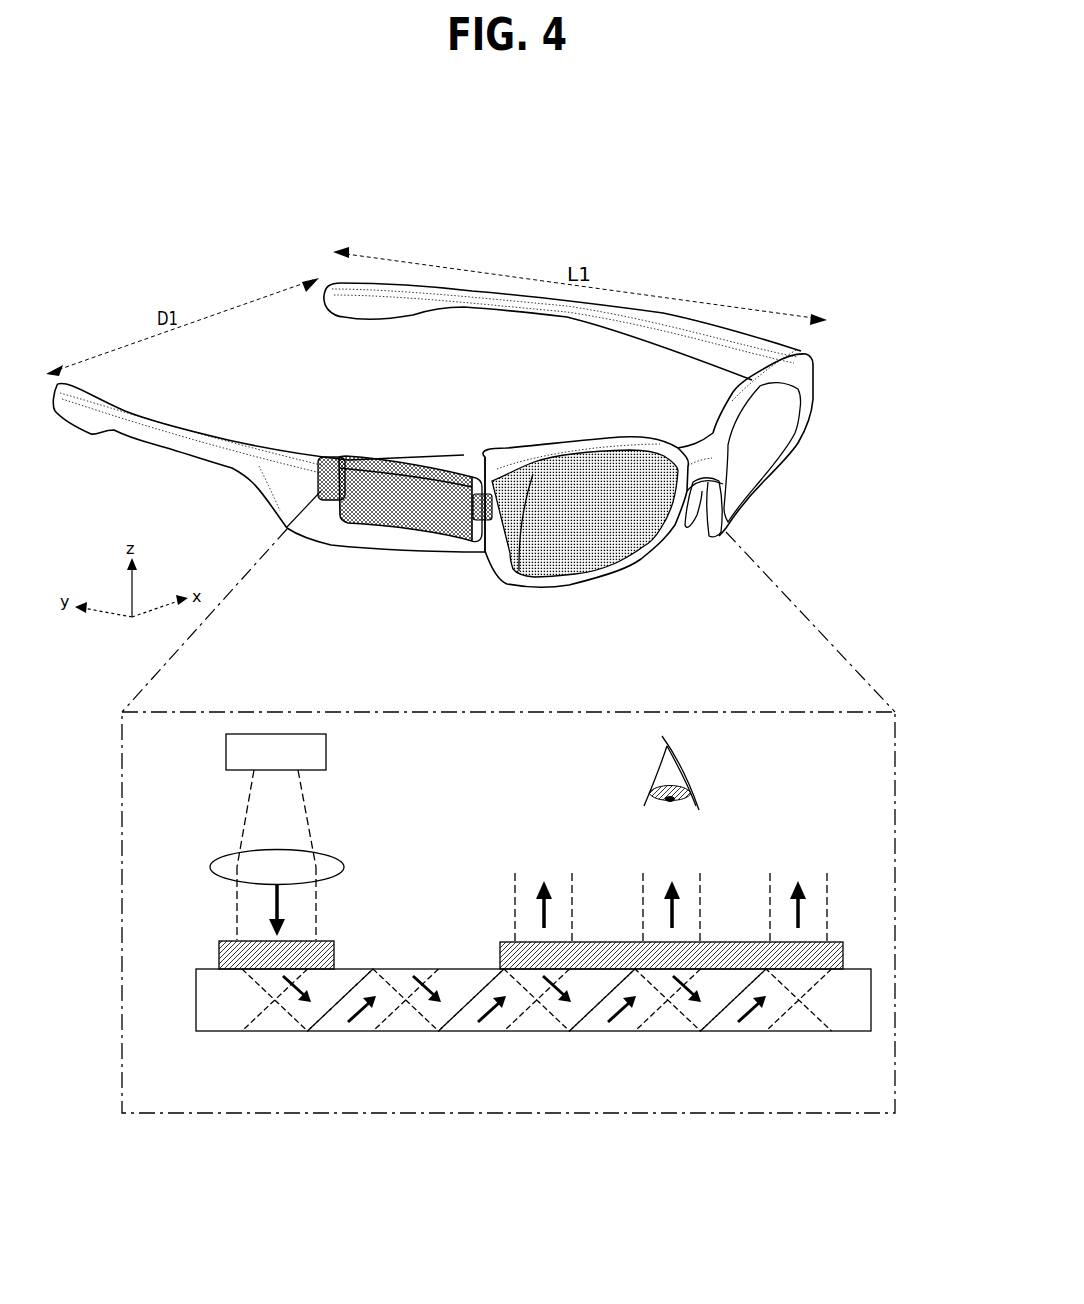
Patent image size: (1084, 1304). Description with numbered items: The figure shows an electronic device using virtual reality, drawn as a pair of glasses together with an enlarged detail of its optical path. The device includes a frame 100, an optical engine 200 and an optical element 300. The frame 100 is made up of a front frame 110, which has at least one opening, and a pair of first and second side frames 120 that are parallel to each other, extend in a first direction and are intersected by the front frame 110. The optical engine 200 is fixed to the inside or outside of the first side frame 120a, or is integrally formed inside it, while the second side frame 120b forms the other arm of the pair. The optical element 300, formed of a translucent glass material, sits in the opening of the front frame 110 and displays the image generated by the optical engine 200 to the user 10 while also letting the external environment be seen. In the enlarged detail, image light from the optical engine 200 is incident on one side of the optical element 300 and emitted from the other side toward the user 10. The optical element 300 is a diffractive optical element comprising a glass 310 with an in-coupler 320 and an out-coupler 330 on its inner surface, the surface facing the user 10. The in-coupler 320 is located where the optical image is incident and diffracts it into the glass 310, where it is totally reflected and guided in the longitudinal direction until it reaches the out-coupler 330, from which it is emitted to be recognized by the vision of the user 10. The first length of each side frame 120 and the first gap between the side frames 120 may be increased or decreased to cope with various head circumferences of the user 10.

The frame 100 is at (680, 144).
The front frame 110 is at (705, 445).
The first and second side frames 120 is at (806, 139).
The first side frame 120a is at (151, 445).
The second side frame 120b is at (367, 314).
The optical engine 200 is at (428, 530).
The optical element 300 is at (585, 557).
The glass 310 is at (532, 1032).
The in-coupler 320 is at (219, 950).
The out-coupler 330 is at (843, 954).
The user 10 is at (694, 772).